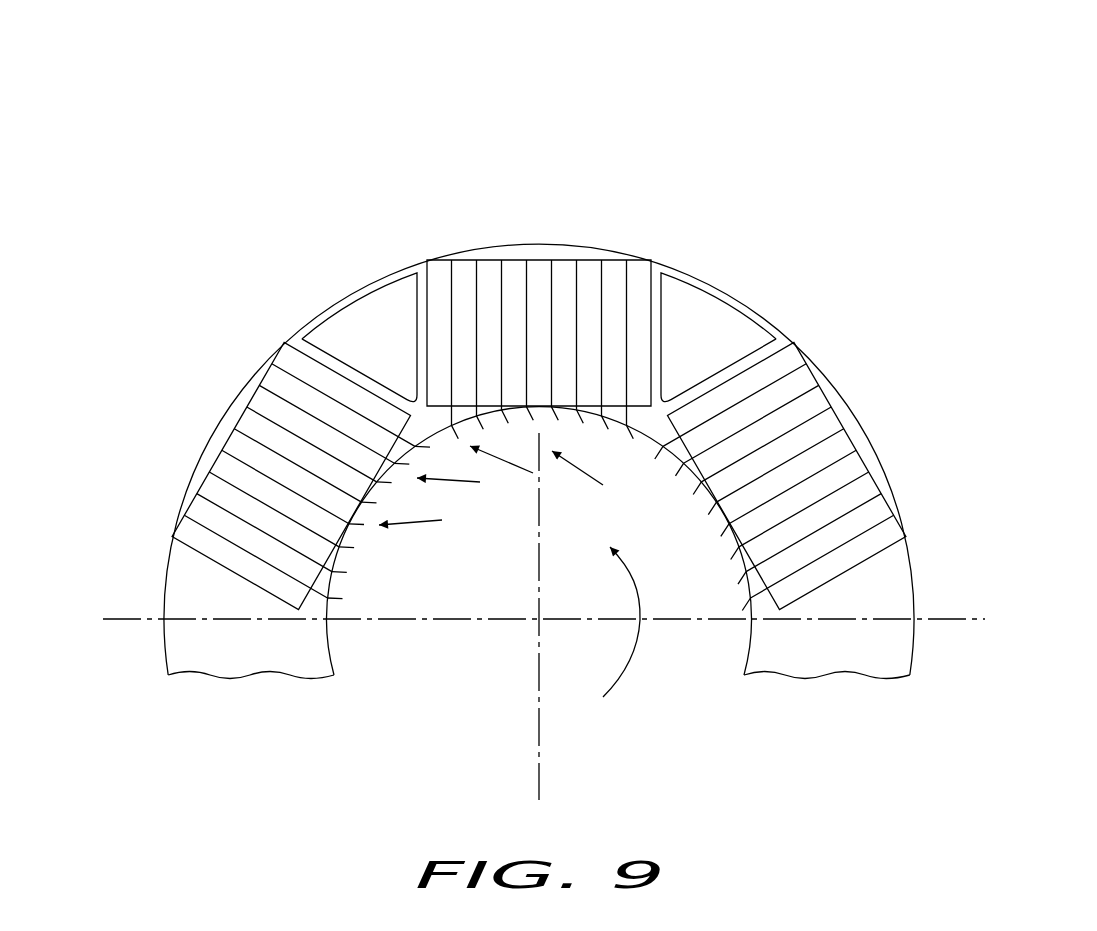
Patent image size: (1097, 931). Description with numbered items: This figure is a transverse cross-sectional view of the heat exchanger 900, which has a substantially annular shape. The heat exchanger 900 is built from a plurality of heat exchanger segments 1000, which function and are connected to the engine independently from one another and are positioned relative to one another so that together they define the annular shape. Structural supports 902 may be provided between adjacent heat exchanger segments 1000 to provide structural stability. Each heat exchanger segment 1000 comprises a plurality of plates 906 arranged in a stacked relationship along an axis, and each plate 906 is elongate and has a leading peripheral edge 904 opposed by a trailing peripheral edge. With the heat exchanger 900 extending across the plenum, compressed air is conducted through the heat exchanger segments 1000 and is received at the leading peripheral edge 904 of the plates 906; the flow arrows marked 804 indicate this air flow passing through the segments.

The heat exchanger 900 is at (745, 158).
The structural supports 902 is at (303, 275).
The leading peripheral edge 904 is at (502, 408).
The plates 906 is at (220, 503).
The heat exchanger segments 1000 is at (569, 255).
The air flow 804 is at (458, 482).